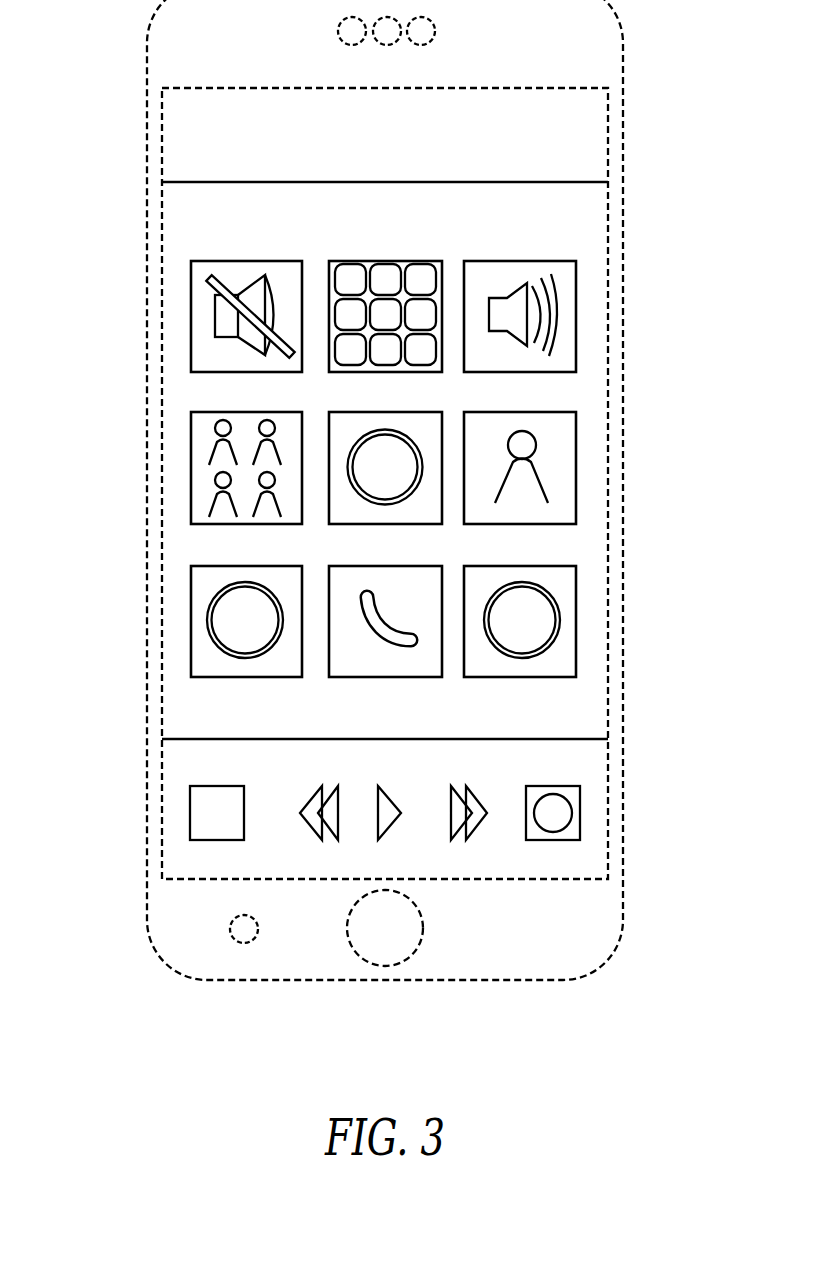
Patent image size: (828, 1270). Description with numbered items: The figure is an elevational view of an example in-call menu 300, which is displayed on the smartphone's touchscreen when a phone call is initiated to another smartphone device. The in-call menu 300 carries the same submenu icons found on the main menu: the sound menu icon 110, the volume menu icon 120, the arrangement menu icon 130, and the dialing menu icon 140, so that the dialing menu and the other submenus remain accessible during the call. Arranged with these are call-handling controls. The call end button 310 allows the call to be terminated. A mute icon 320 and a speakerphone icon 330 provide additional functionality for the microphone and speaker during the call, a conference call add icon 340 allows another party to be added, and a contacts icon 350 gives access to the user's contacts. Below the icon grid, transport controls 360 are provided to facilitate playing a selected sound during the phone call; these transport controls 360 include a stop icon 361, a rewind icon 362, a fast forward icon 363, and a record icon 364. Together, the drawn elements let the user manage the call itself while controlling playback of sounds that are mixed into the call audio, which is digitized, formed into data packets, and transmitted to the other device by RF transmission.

The in-call menu 300 is at (608, 708).
The call end button 310 is at (363, 677).
The mute icon 320 is at (191, 298).
The speakerphone icon 330 is at (576, 308).
The conference call add icon 340 is at (191, 452).
The contacts icon 350 is at (576, 475).
The transport controls 360 is at (583, 784).
The stop icon 361 is at (190, 810).
The rewind icon 362 is at (310, 836).
The fast forward icon 363 is at (480, 822).
The record icon 364 is at (580, 820).
The sound menu icon 110 is at (442, 428).
The volume menu icon 120 is at (191, 607).
The arrangement menu icon 130 is at (576, 622).
The dialing menu icon 140 is at (417, 372).